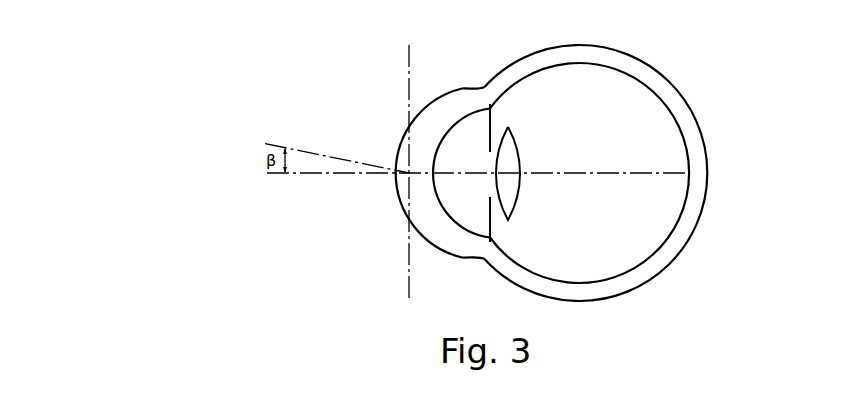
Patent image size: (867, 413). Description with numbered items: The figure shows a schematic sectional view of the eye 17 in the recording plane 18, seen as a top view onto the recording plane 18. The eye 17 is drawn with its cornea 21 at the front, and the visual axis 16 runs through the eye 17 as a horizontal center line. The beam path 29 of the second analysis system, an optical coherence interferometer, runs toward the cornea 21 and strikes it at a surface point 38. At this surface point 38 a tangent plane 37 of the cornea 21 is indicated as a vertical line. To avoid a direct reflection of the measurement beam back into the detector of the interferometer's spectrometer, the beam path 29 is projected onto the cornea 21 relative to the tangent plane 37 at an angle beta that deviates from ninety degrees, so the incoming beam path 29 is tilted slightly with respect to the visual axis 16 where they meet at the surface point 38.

The visual axis 16 is at (673, 173).
The eye 17 is at (664, 67).
The recording plane 18 is at (366, 134).
The cornea 21 is at (441, 118).
The beam path 29 is at (316, 154).
The tangent plane 37 is at (409, 70).
The surface point 38 is at (404, 184).